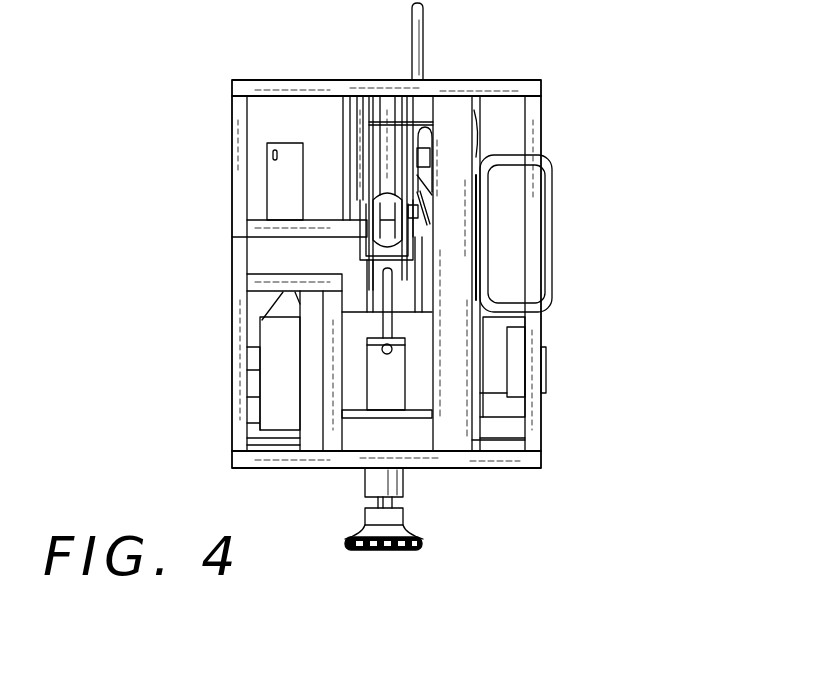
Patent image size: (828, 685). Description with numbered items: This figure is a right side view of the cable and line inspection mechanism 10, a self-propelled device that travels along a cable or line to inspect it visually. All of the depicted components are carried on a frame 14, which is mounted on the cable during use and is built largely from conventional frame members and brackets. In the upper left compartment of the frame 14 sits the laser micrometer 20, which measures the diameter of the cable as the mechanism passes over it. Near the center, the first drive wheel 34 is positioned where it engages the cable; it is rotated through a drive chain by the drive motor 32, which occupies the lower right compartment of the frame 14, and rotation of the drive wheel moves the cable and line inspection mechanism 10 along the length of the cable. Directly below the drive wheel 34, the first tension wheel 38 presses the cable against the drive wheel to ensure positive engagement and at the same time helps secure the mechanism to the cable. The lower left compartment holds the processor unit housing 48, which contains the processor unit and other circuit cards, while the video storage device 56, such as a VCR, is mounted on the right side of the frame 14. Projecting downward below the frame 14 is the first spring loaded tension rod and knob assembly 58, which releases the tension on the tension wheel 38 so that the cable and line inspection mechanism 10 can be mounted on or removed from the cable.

The cable and line inspection mechanism 10 is at (677, 147).
The frame 14 is at (245, 417).
The laser micrometer 20 is at (277, 195).
The drive motor 32 is at (497, 407).
The first drive wheel 34 is at (387, 147).
The first tension wheel 38 is at (388, 230).
The processor unit housing 48 is at (273, 382).
The video storage device 56 is at (513, 227).
The first spring loaded tension rod and knob assembly 58 is at (362, 555).